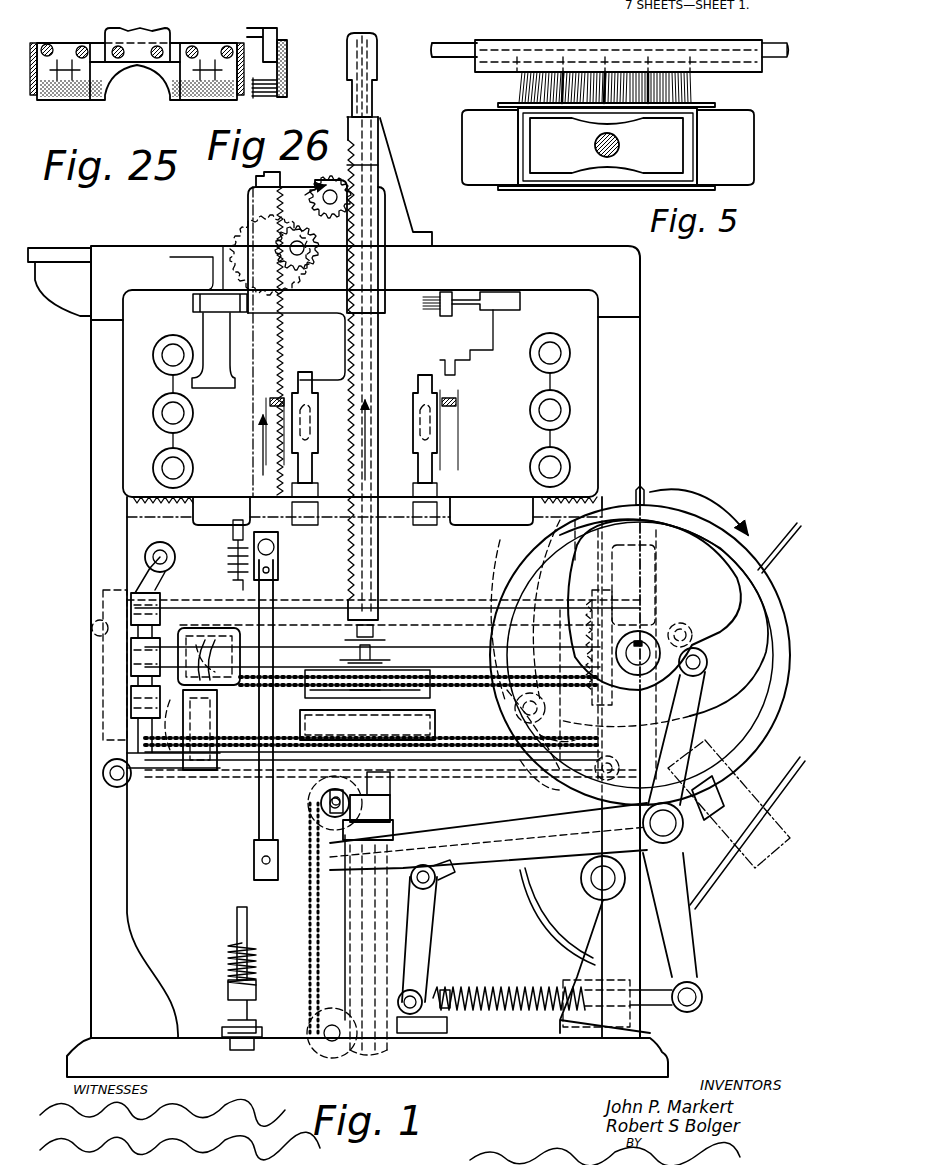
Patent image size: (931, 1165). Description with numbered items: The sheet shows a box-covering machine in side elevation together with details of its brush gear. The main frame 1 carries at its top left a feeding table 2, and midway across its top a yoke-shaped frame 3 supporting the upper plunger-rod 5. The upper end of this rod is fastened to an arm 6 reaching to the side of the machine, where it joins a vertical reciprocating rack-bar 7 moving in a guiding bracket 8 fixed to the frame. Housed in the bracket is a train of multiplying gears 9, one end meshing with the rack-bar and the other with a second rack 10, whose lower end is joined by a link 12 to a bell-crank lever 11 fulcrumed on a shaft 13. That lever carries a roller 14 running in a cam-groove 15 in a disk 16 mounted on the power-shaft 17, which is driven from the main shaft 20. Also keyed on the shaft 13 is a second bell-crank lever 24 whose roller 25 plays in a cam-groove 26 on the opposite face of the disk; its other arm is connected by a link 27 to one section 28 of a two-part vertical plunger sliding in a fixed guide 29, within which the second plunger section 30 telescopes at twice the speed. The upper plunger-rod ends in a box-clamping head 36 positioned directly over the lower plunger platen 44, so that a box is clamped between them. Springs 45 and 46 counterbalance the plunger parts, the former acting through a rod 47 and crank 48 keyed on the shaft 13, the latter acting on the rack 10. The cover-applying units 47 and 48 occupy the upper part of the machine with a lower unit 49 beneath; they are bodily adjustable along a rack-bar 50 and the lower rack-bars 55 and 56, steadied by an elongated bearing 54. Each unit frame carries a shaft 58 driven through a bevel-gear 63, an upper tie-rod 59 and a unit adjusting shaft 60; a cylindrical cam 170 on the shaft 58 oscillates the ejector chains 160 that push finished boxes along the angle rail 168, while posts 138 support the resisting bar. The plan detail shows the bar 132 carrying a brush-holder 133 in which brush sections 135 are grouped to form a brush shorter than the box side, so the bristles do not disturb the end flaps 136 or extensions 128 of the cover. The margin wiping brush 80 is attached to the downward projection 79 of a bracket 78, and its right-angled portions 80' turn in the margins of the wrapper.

In FIG. 1, the main frame 1 is at (632, 430).
In FIG. 1, the feeding table 2 is at (57, 250).
In FIG. 1, the yoke-shaped frame 3 is at (392, 157).
In FIG. 1, the upper plunger-rod 5 is at (374, 633).
In FIG. 1, the arm 6 is at (352, 97).
In FIG. 1, the vertical reciprocating rack-bar 7 is at (380, 438).
In FIG. 1, the guiding bracket 8 is at (385, 200).
In FIG. 1, the train of multiplying gears 9 is at (306, 207).
In FIG. 1, the rack 10 is at (256, 178).
In FIG. 1, the bell-crank lever 11 is at (430, 838).
In FIG. 1, the link 12 is at (258, 796).
In FIG. 1, the shaft 13 is at (667, 825).
In FIG. 1, the roller 14 is at (707, 662).
In FIG. 1, the cam-groove 15 is at (752, 597).
In FIG. 1, the disk 16 is at (752, 726).
In FIG. 1, the power-shaft 17 is at (640, 650).
In FIG. 1, the main shaft 20 is at (600, 878).
In FIG. 1, the second bell-crank lever 24 is at (680, 720).
In FIG. 1, the roller 25 is at (692, 633).
In FIG. 1, the cam-groove 26 is at (732, 525).
In FIG. 1, the link 27 is at (420, 985).
In FIG. 1, the plunger section 28 is at (391, 808).
In FIG. 1, the fixed guide 29 is at (394, 829).
In FIG. 1, the second plunger section 30 is at (391, 786).
In FIG. 5, the box-clamping head 36 is at (607, 146).
In FIG. 1, the box-clamping head 36 is at (420, 692).
In FIG. 1, the lower plunger platen 44 is at (318, 790).
In FIG. 1, the spring 45 is at (470, 992).
In FIG. 1, the spring 46 is at (232, 950).
In FIG. 1, the cover-applying unit 47 is at (663, 1022).
In FIG. 1, the cover-applying unit 48 is at (730, 944).
In FIG. 1, the lower cover-applying unit 49 is at (440, 612).
In FIG. 1, the rack-bar 50 is at (175, 510).
In FIG. 1, the elongated bearing 54 is at (220, 522).
In FIG. 1, the rack-bar 55 is at (600, 775).
In FIG. 1, the rack-bar 56 is at (108, 783).
In FIG. 1, the shaft 58 is at (170, 413).
In FIG. 1, the tie-rod 59 is at (565, 338).
In FIG. 1, the unit adjusting shaft 60 is at (170, 468).
In FIG. 1, the bevel-gear 63 is at (633, 632).
In FIG. 26, the bracket 78 is at (263, 33).
In FIG. 25, the downward projection 79 is at (147, 55).
In FIG. 25, the horizontal brush 80 is at (156, 113).
In FIG. 26, the horizontal brush 80 is at (248, 100).
In FIG. 1, the horizontal brush 80 is at (361, 426).
In FIG. 25, the right-angled portions of the brush 80' is at (132, 37).
In FIG. 26, the right-angled portions of the brush 80' is at (303, 68).
In FIG. 5, the extensions 128 is at (498, 105).
In FIG. 5, the bar 132 is at (440, 50).
In FIG. 1, the bar 132 is at (455, 310).
In FIG. 5, the brush-holder 133 is at (540, 62).
In FIG. 5, the brush sections 135 is at (578, 62).
In FIG. 1, the brush sections 135 is at (436, 312).
In FIG. 5, the end flaps of the cover 136 is at (608, 147).
In FIG. 1, the posts 138 is at (312, 375).
In FIG. 1, the chains 160 is at (350, 740).
In FIG. 1, the angle rail 168 is at (170, 760).
In FIG. 1, the cylindrical cam 170 is at (209, 632).